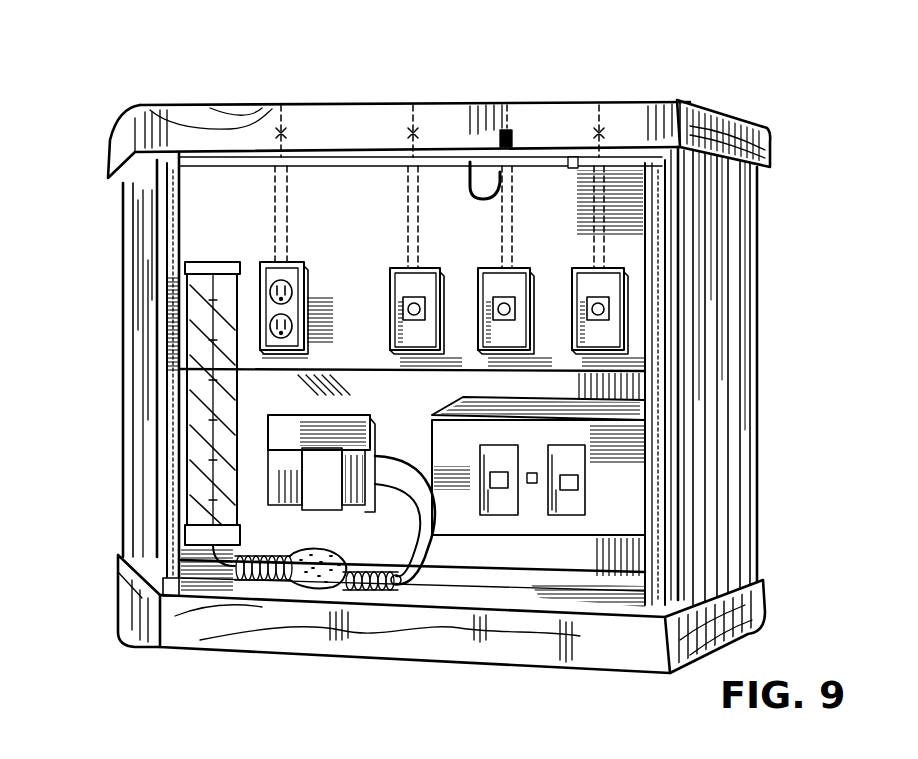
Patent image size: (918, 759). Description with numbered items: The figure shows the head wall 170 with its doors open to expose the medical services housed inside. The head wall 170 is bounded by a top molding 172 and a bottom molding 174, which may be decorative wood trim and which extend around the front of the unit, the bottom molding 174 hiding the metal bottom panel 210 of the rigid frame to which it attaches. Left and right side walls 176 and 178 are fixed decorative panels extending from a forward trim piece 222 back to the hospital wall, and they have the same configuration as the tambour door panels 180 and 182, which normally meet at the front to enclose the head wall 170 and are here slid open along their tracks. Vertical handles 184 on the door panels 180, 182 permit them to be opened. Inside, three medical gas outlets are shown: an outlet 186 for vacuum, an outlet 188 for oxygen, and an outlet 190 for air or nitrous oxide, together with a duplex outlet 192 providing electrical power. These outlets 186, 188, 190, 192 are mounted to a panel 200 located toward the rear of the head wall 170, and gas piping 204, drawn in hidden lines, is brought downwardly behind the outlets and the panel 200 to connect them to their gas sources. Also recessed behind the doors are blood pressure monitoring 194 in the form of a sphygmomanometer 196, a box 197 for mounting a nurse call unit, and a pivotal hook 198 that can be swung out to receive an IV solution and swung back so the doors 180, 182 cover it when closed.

The head wall 170 is at (686, 78).
The top molding 172 is at (232, 104).
The bottom molding 174 is at (190, 645).
The left side wall 176 is at (124, 382).
The right side wall 178 is at (746, 377).
The door panel 180 is at (168, 598).
The door panel 182 is at (660, 640).
The vertical handle 184 is at (160, 518).
The outlet for vacuum 186 is at (580, 267).
The outlet for oxygen 188 is at (488, 249).
The outlet for air or nitrous oxide 190 is at (399, 266).
The duplex outlet 192 is at (290, 266).
The blood pressure monitoring 194 is at (218, 262).
The sphygmomanometer 196 is at (346, 418).
The box 197 is at (470, 452).
The pivotal hook 198 is at (521, 170).
The panel 200 is at (360, 328).
The gas piping 204 is at (413, 106).
The bottom panel 210 is at (520, 598).
The forward trim piece 222 is at (690, 126).